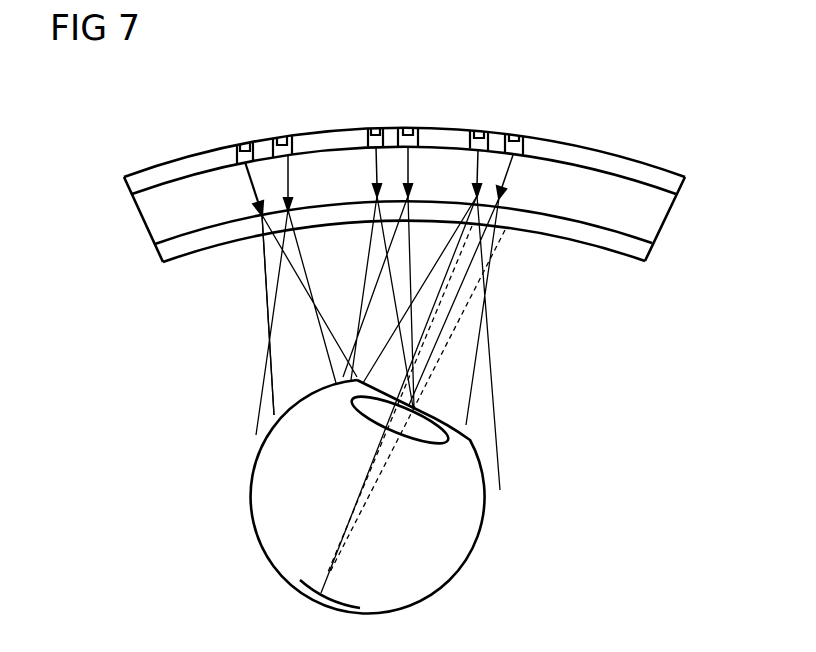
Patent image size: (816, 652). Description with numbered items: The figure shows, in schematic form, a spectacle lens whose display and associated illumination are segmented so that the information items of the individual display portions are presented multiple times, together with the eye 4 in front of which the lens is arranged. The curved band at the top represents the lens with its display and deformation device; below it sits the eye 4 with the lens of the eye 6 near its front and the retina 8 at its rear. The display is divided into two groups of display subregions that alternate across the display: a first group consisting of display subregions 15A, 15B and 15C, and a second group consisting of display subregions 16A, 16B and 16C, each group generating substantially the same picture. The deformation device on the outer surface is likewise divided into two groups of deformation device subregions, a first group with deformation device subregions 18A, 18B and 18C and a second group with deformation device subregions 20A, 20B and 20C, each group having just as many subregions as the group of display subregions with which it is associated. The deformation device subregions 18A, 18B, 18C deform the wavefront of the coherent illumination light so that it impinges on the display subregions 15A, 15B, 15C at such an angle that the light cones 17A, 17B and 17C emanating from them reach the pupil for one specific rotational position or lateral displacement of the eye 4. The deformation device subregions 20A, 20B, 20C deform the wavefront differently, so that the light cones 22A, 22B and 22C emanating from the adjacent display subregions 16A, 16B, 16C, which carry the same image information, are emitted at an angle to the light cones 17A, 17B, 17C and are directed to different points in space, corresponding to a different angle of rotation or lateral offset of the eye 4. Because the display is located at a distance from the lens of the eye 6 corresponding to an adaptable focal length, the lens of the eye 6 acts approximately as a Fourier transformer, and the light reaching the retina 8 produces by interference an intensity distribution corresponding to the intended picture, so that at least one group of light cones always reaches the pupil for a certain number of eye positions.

The eye 4 is at (458, 548).
The lens of the eye 6 is at (447, 440).
The retina 8 is at (430, 587).
The display subregion 15A is at (272, 190).
The display subregion 15B is at (390, 183).
The display subregion 15C is at (488, 181).
The display subregion 16A is at (297, 203).
The display subregion 16B is at (413, 196).
The display subregion 16C is at (512, 199).
The light cone 17A is at (330, 353).
The light cone 17B is at (375, 327).
The light cone 17C is at (483, 405).
The deformation device subregion 18A is at (247, 145).
The deformation device subregion 18B is at (377, 138).
The deformation device subregion 18C is at (479, 140).
The deformation device subregion 20A is at (283, 146).
The deformation device subregion 20B is at (411, 138).
The deformation device subregion 20C is at (516, 140).
The light cone 22A is at (265, 403).
The light cone 22B is at (397, 263).
The light cone 22C is at (483, 255).